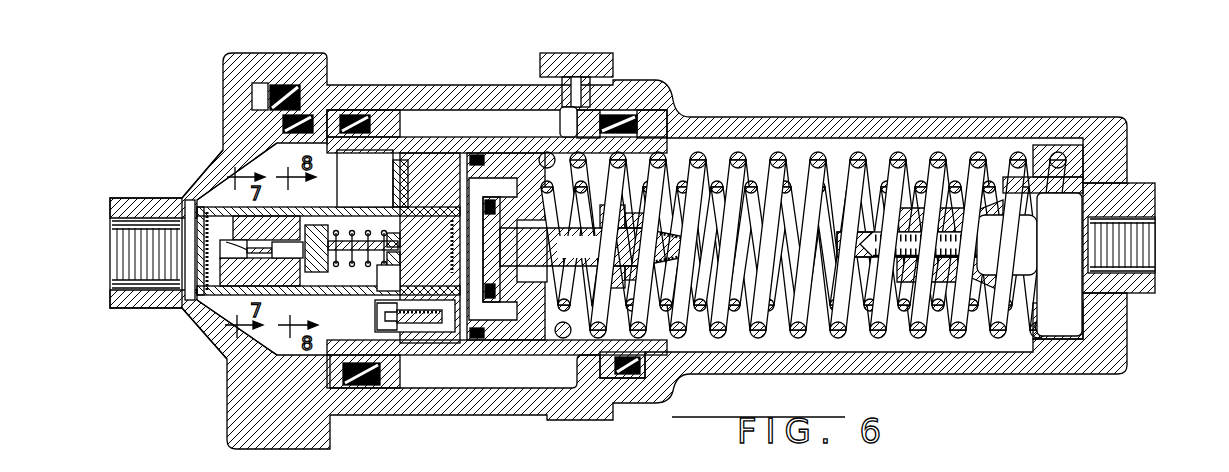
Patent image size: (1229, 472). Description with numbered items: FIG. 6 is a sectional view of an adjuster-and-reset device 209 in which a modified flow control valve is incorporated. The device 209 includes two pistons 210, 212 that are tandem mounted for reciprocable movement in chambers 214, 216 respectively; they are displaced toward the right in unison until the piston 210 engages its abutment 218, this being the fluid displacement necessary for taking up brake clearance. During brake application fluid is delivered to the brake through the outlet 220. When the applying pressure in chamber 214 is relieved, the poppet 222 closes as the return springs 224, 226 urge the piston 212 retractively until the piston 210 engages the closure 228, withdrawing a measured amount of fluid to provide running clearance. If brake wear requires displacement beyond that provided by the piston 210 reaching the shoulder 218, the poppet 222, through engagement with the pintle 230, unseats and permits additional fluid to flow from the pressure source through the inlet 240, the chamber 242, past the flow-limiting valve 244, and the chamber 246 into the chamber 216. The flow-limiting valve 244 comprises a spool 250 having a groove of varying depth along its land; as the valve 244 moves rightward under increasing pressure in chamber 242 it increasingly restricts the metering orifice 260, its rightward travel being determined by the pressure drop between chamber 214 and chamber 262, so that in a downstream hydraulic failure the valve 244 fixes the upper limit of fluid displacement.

The device 209 is at (1027, 119).
The piston 210 is at (388, 116).
The piston 212 is at (507, 160).
The chamber 214 is at (367, 153).
The chamber 216 is at (808, 245).
The abutment 218 is at (570, 127).
The outlet 220 is at (1137, 260).
The poppet 222 is at (595, 246).
The return spring 224 is at (940, 157).
The return spring 226 is at (717, 190).
The closure 228 is at (217, 160).
The pintle 230 is at (990, 255).
The inlet 240 is at (115, 268).
The chamber 242 is at (200, 312).
The flow-limiting valve 244 is at (283, 258).
The chamber 246 is at (508, 310).
The spool 250 is at (183, 183).
The metering orifice 260 is at (307, 225).
The chamber 262 is at (363, 273).